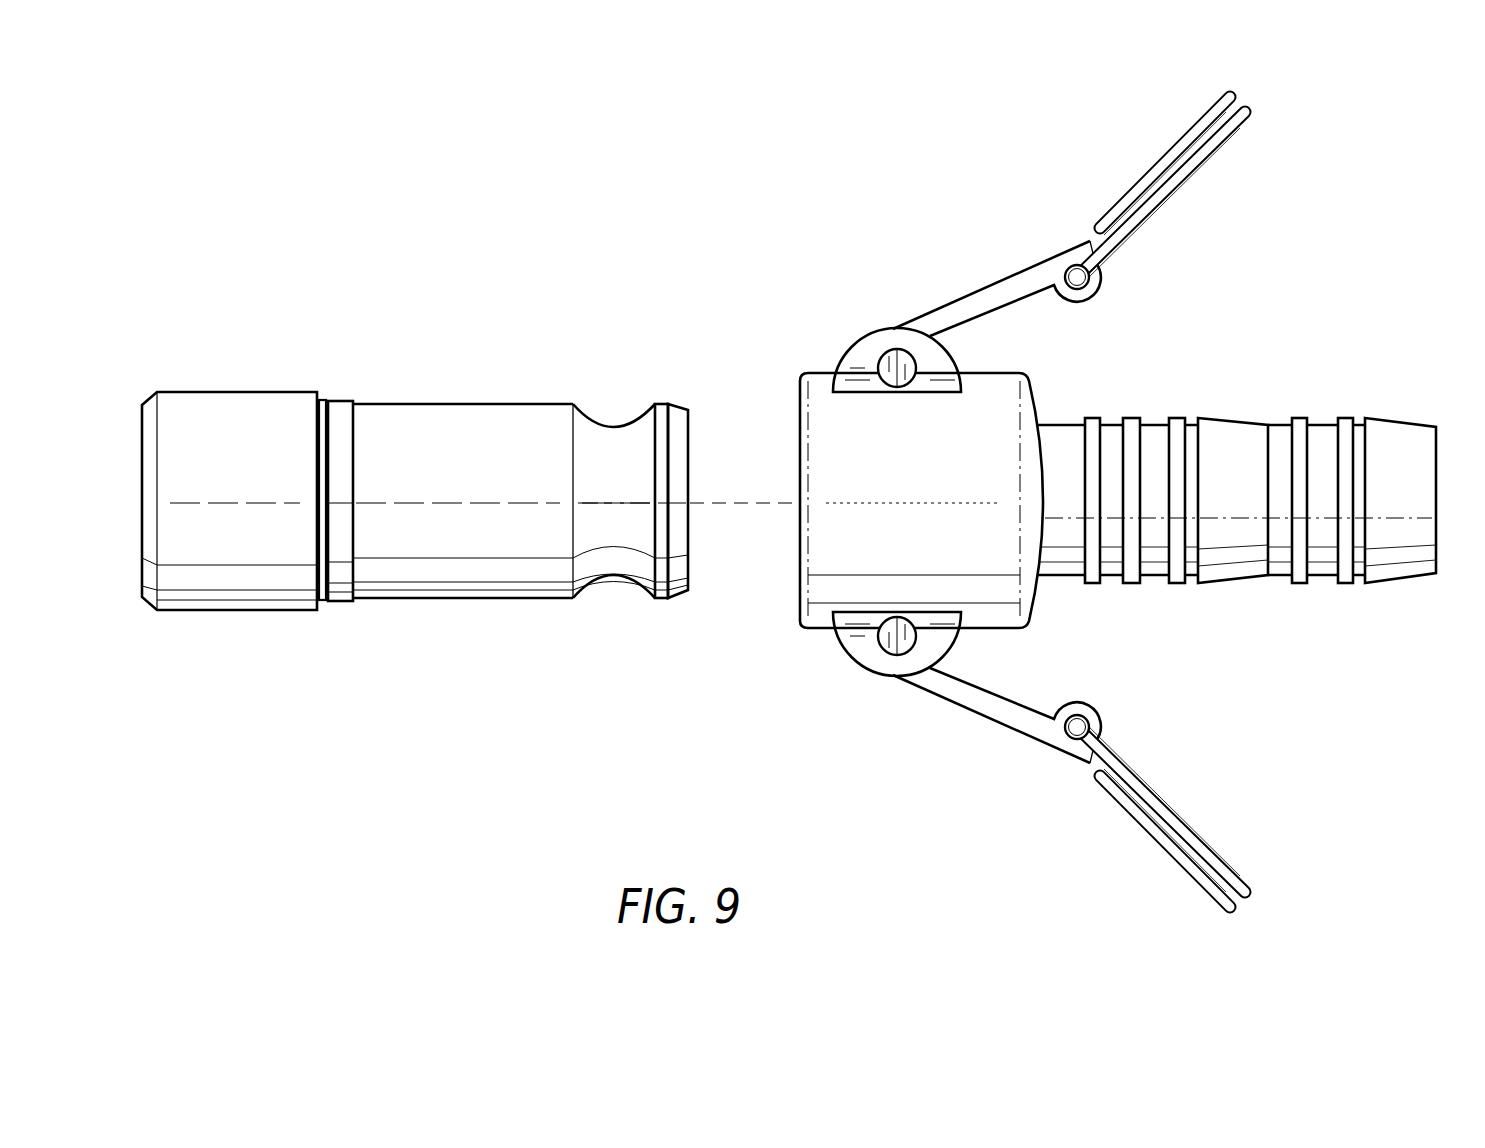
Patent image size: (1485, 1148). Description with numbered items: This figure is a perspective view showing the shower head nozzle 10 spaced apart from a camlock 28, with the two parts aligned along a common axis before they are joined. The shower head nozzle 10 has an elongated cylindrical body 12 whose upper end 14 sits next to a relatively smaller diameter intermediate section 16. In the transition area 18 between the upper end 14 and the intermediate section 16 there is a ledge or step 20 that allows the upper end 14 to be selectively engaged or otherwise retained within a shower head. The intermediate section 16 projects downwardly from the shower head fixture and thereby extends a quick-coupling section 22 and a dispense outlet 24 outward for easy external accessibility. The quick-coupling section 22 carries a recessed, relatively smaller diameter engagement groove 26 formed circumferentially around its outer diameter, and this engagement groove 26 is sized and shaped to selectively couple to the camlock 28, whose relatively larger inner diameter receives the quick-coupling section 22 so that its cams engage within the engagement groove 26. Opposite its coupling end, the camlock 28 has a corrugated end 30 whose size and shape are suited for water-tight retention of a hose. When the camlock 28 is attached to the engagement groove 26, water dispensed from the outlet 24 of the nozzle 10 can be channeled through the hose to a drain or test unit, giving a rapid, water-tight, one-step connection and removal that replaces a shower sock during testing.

The shower head nozzle 10 is at (268, 286).
The elongated cylindrical body 12 is at (688, 381).
The upper end 14 is at (237, 597).
The intermediate section 16 is at (420, 571).
The transition area 18 is at (344, 620).
The ledge or step 20 is at (326, 603).
The quick-coupling section 22 is at (580, 616).
The dispense outlet 24 is at (703, 600).
The engagement groove 26 is at (613, 575).
The camlock 28 is at (848, 438).
The corrugated end 30 is at (1232, 430).